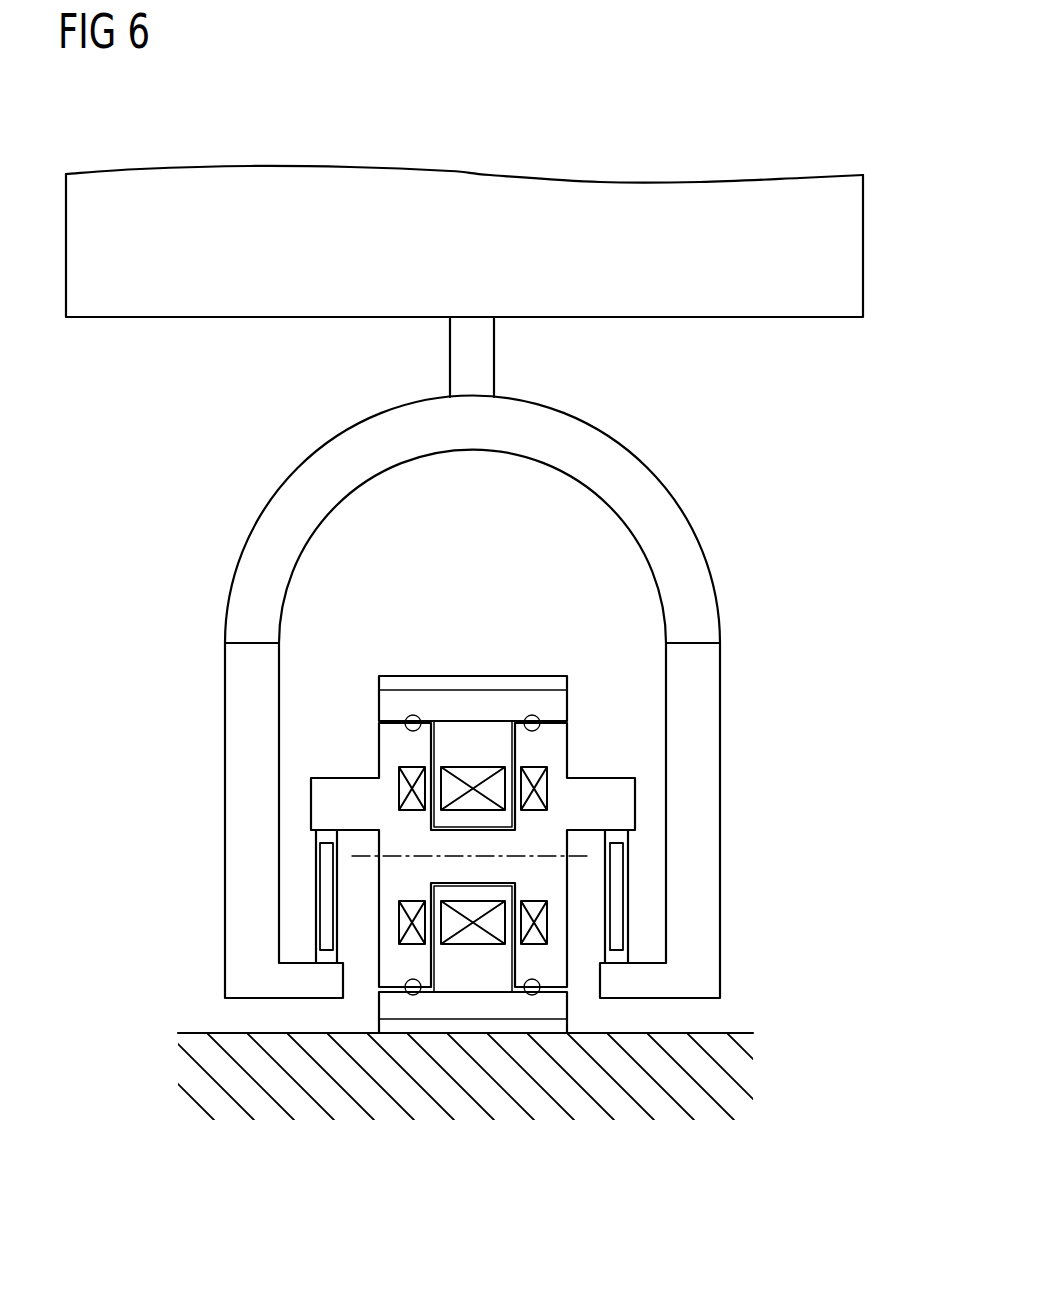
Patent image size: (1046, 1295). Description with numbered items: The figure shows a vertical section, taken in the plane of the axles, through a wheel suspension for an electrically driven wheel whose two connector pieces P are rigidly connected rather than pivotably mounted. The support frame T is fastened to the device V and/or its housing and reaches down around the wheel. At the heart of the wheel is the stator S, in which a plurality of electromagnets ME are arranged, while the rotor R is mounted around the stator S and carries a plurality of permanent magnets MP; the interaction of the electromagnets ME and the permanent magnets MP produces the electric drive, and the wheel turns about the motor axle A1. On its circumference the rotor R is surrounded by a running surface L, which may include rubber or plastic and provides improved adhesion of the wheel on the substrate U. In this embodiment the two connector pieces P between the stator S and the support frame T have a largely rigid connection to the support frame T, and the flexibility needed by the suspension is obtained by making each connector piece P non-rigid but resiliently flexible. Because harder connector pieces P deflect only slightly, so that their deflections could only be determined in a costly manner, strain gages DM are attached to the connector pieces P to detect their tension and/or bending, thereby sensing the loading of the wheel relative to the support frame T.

The device V is at (660, 183).
The support frame T is at (224, 705).
The stator S is at (379, 750).
The rotor R is at (568, 702).
The running surface L is at (532, 676).
The permanent magnets MP is at (473, 766).
The electromagnets ME is at (548, 783).
The strain gages DM is at (326, 873).
The connector piece P is at (315, 888).
The motor axle A1 is at (573, 858).
The substrate U is at (272, 1034).